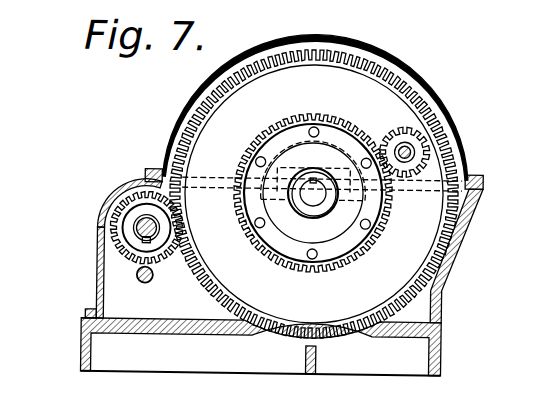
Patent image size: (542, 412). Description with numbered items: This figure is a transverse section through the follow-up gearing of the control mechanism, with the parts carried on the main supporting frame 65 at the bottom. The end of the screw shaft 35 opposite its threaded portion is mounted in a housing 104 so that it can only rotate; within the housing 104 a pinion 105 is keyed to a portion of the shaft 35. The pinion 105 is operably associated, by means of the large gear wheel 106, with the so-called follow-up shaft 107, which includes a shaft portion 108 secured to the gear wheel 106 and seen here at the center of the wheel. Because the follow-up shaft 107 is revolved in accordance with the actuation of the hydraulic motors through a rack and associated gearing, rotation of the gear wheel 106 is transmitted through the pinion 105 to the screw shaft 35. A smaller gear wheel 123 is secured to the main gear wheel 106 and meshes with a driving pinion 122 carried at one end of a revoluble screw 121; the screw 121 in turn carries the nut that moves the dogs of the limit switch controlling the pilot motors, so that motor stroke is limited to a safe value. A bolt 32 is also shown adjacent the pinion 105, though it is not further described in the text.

The bolt 32 is at (143, 286).
The screw shaft 35 is at (137, 230).
The main supporting frame 65 is at (88, 335).
The housing 104 is at (147, 180).
The pinion 105 is at (116, 195).
The gear wheel 106 is at (394, 79).
The follow-up shaft 107 is at (313, 196).
The shaft portion 108 is at (272, 276).
The revoluble screw 121 is at (411, 150).
The driving pinion 122 is at (408, 134).
The gear wheel 123 is at (297, 116).